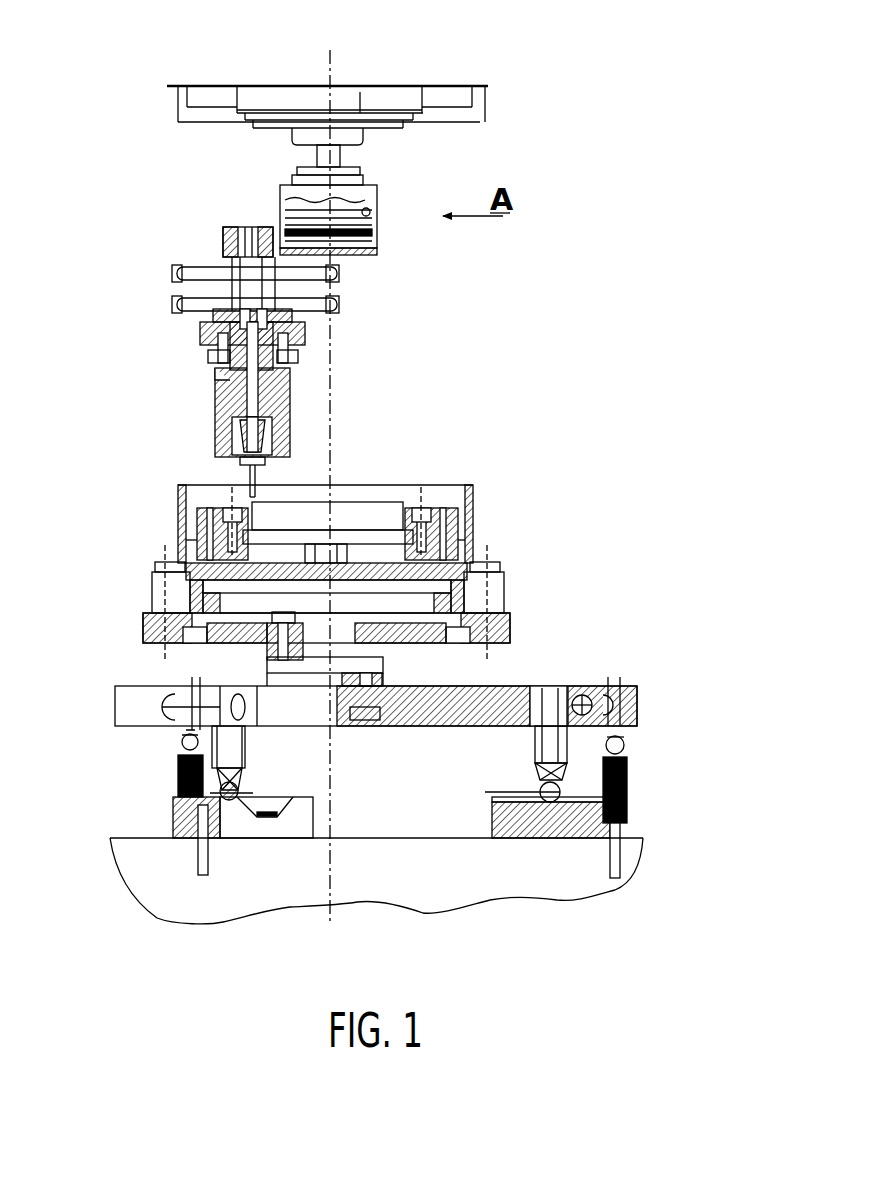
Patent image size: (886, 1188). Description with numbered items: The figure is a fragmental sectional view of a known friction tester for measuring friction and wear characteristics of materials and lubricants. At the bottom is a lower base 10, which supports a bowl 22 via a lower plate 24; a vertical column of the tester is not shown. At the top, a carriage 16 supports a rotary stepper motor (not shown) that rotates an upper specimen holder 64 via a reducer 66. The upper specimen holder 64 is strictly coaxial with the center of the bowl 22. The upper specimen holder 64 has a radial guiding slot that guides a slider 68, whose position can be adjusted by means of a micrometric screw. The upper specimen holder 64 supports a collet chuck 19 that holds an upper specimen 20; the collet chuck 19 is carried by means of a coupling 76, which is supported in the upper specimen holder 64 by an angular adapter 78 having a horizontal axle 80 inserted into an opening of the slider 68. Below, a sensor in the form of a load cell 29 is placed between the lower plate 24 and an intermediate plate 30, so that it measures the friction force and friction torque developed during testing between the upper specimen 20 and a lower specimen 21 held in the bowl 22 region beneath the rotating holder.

The lower base 10 is at (165, 898).
The carriage 16 is at (447, 92).
The collet chuck 19 is at (287, 433).
The upper specimen 20 is at (257, 492).
The lower specimen 21 is at (367, 515).
The bowl 22 is at (483, 523).
The lower plate 24 is at (653, 687).
The load cell 29 is at (383, 663).
The intermediate plate 30 is at (515, 580).
The upper specimen holder 64 is at (162, 333).
The reducer 66 is at (270, 132).
The slider 68 is at (203, 237).
The coupling 76 is at (180, 288).
The angular adapter 78 is at (370, 257).
The horizontal axle 80 is at (373, 243).